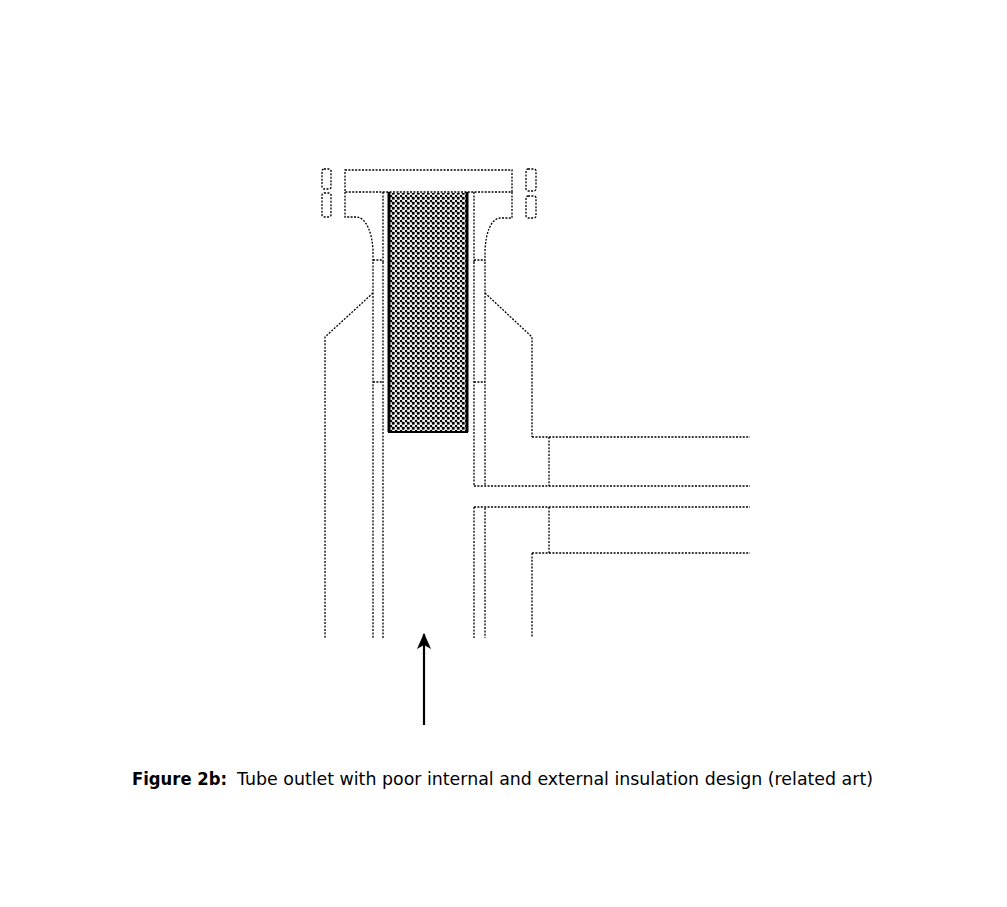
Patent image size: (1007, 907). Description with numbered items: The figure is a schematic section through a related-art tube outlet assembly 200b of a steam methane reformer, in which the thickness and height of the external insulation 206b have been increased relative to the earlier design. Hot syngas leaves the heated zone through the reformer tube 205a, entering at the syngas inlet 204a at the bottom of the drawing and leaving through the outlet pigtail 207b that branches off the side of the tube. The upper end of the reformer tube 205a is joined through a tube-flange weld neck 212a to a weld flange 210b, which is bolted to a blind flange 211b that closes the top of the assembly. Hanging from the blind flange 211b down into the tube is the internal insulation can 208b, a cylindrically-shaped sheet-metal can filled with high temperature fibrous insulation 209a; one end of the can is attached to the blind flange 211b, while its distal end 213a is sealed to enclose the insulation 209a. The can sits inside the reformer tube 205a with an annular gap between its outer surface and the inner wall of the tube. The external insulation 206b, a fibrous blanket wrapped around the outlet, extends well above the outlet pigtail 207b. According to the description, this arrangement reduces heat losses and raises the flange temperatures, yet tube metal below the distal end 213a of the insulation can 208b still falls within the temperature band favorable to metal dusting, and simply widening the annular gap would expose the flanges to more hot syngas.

The tube outlet assembly (related art) 200b is at (413, 105).
The blind flange 211b is at (494, 177).
The weld flange 210b is at (490, 240).
The tube-flange weld neck 212a is at (368, 263).
The insulation 209a is at (414, 327).
The internal insulation can 208b is at (474, 323).
The distal end of internal insulation can 213a is at (421, 441).
The outlet pigtail 207b is at (530, 481).
The external insulation 206b is at (513, 593).
The reformer tube 205a is at (481, 625).
The syngas inlet 204a is at (472, 694).